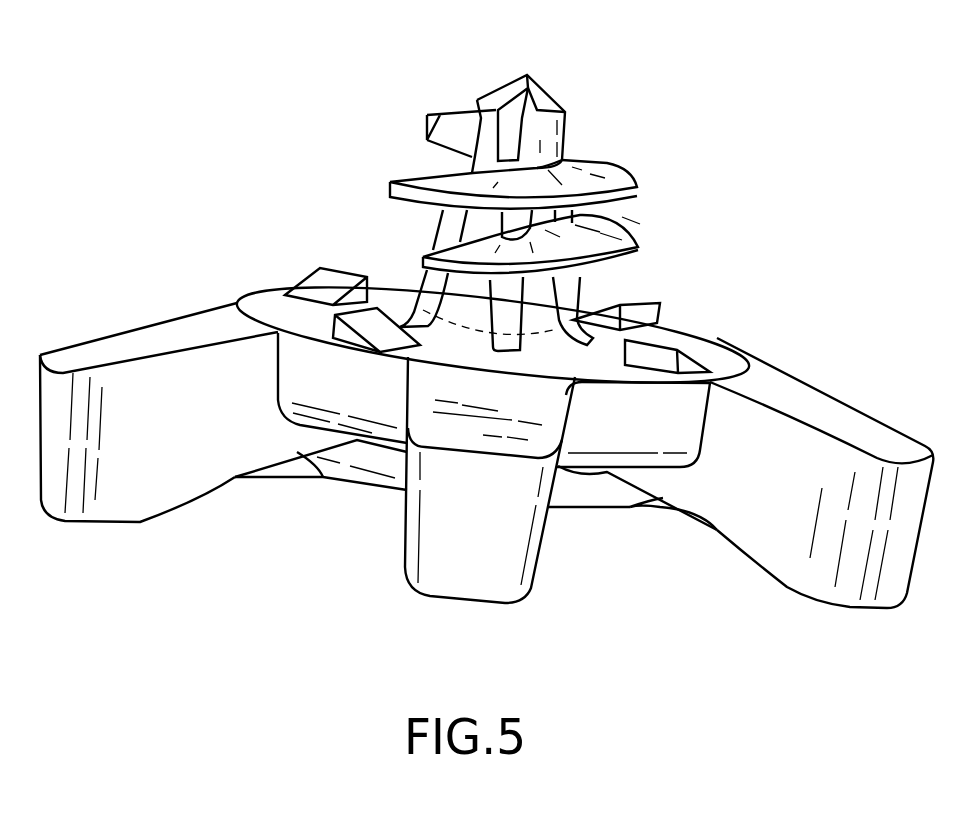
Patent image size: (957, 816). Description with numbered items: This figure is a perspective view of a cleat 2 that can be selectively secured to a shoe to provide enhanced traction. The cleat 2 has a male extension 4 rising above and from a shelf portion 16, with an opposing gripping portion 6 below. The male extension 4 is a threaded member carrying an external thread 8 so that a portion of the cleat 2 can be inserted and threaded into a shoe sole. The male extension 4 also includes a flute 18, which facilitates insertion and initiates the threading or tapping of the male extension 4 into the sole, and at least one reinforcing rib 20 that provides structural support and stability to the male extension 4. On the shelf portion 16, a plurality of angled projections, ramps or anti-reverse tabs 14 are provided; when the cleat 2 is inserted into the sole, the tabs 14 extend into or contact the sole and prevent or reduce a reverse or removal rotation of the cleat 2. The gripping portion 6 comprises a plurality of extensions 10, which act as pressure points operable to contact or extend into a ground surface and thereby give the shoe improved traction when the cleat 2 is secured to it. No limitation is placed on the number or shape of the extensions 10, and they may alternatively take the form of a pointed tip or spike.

The cleat 2 is at (497, 181).
The male extension 4 is at (550, 92).
The gripping portion 6 is at (366, 518).
The external thread 8 is at (613, 173).
The extensions 10 is at (169, 482).
The anti-reverse tabs 14 is at (304, 272).
The shelf portion 16 is at (715, 333).
The flute 18 is at (512, 104).
The reinforcing rib 20 is at (476, 310).